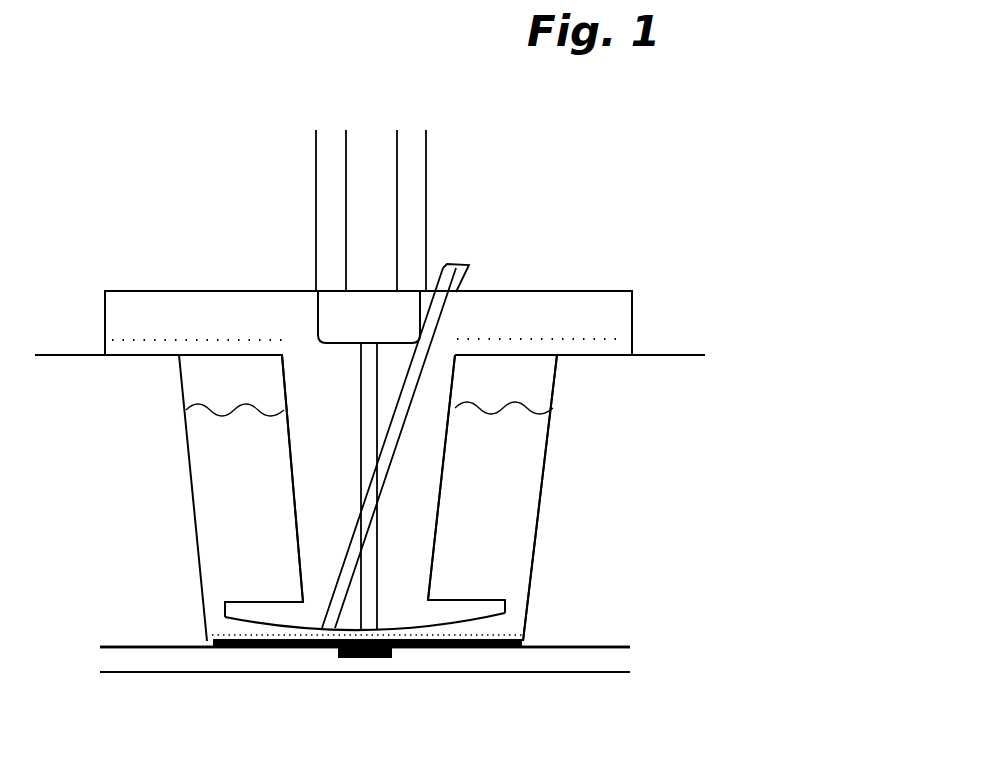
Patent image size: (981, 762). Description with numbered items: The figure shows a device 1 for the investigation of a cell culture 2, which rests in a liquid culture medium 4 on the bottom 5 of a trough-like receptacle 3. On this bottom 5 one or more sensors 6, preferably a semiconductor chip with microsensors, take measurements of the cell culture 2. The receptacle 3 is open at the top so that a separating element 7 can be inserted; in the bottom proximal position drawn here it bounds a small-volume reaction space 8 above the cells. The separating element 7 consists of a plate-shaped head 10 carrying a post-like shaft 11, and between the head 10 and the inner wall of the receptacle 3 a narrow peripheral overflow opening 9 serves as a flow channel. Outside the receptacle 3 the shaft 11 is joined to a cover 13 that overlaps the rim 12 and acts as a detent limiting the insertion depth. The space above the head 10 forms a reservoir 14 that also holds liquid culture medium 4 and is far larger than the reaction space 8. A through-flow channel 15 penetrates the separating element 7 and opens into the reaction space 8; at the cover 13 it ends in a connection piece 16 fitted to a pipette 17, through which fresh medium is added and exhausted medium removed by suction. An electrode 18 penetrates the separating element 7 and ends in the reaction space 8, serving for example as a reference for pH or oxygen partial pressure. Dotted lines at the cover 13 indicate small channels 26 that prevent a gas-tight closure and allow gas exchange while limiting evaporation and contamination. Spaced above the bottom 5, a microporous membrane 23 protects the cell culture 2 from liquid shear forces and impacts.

The device 1 is at (140, 186).
The cell culture 2 is at (468, 632).
The receptacle 3 is at (546, 485).
The liquid culture medium 4 is at (514, 518).
The bottom 5 is at (291, 650).
The sensors 6 is at (372, 658).
The separating element 7 is at (282, 580).
The reaction space 8 is at (242, 630).
The overflow opening 9 is at (218, 604).
The head 10 is at (442, 612).
The shaft 11 is at (426, 507).
The rim 12 is at (148, 355).
The cover 13 is at (537, 302).
The reservoir 14 is at (230, 488).
The through-flow channel 15 is at (372, 566).
The connection piece 16 is at (332, 314).
The pipette 17 is at (416, 172).
The electrode 18 is at (442, 325).
The microporous membrane 23 is at (437, 634).
The channels 26 is at (196, 345).